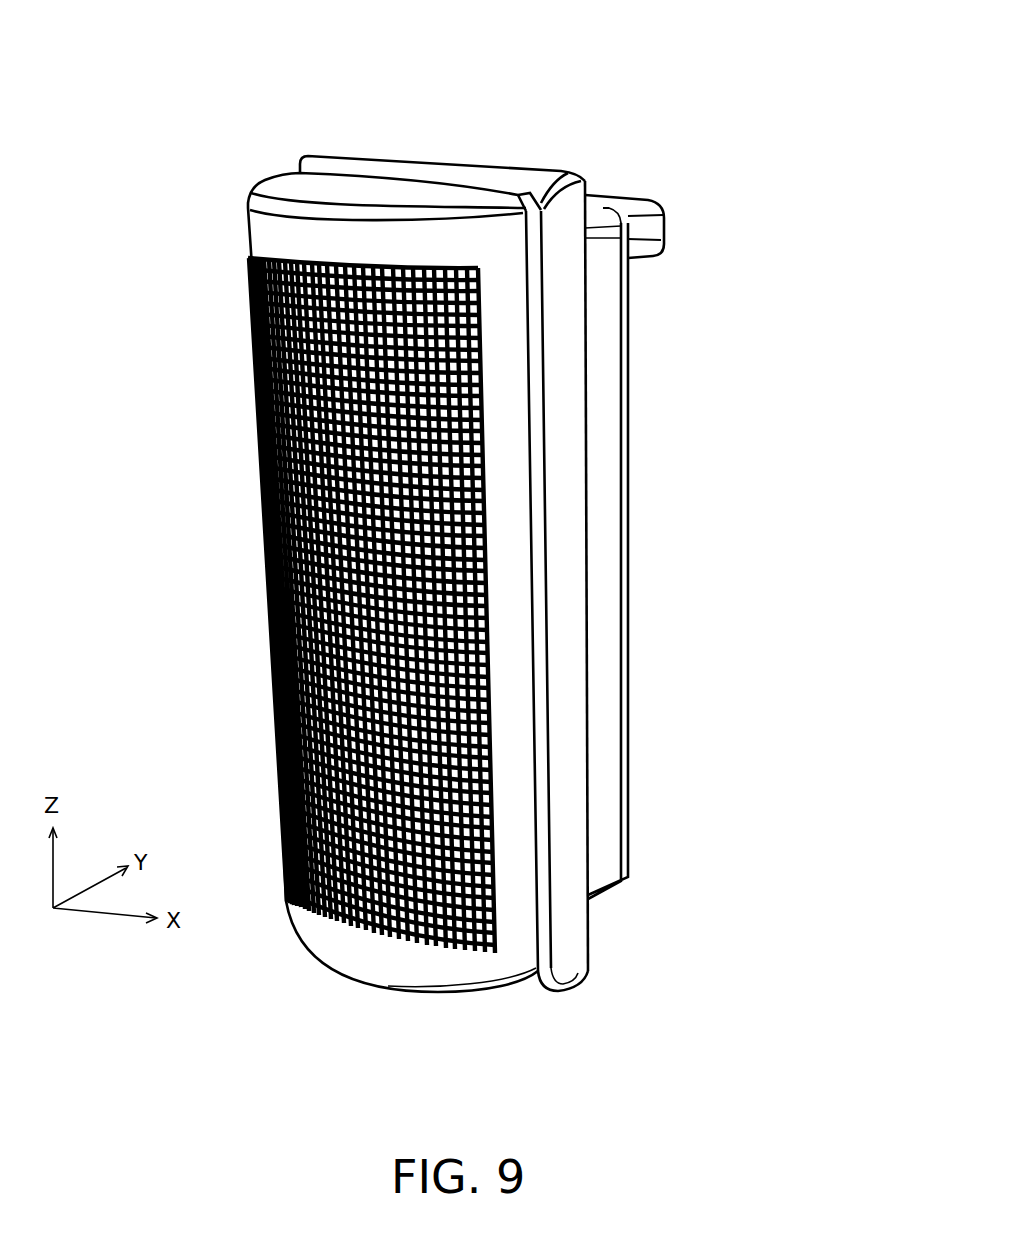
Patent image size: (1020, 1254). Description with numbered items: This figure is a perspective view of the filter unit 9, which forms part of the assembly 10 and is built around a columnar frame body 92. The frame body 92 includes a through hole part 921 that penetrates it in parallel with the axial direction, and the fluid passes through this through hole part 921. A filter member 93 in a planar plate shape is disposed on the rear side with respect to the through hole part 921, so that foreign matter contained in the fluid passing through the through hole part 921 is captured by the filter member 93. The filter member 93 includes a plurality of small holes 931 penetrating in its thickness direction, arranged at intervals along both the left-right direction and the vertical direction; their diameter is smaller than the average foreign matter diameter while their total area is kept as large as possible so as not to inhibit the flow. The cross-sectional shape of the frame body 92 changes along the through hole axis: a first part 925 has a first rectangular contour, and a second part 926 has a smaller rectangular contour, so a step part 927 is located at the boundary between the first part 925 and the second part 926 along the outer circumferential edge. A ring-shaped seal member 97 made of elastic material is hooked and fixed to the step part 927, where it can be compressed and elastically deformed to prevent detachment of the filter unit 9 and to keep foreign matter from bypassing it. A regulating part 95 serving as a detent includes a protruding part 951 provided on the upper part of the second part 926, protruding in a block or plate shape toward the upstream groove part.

The electric shaver 10 is at (863, 71).
The filter unit 9 is at (779, 146).
The seal member 97 is at (413, 152).
The step part 927 is at (478, 178).
The filter member 93 is at (268, 249).
The small holes 931 is at (473, 368).
The regulating part 95 is at (648, 216).
The protruding part 951 is at (653, 228).
The second part 926 is at (620, 447).
The first part 925 is at (538, 548).
The frame body 92 is at (773, 385).
The through hole part 921 is at (593, 612).